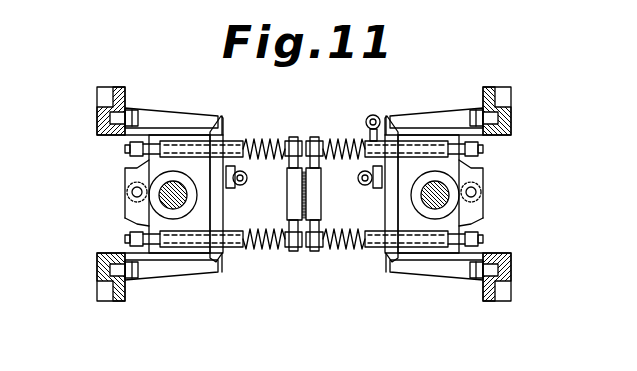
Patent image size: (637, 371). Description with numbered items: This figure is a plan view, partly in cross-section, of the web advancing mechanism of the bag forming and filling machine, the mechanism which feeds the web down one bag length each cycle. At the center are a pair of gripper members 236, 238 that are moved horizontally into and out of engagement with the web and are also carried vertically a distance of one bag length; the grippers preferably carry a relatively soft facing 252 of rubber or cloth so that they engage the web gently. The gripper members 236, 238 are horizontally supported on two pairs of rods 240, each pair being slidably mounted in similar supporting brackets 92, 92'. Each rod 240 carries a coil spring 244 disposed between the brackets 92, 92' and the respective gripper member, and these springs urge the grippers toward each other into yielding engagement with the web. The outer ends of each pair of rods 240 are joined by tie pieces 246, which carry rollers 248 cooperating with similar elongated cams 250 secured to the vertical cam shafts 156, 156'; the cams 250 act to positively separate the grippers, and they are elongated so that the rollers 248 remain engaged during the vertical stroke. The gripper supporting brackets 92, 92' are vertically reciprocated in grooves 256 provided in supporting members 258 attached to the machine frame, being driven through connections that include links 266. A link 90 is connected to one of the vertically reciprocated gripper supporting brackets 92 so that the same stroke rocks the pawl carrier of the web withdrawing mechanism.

The supporting member 258 is at (155, 112).
The gripper supporting bracket 92 is at (465, 155).
The gripper supporting bracket 92' is at (171, 205).
The groove 256 is at (219, 125).
The coil spring 244 is at (242, 168).
The rod 240 is at (289, 137).
The link 266 is at (287, 137).
The soft facing 252 is at (283, 250).
The vertical cam shaft 156 is at (492, 194).
The vertical cam shaft 156' is at (128, 194).
The tie piece 246 is at (140, 167).
The elongated cam 250 is at (150, 223).
The roller 248 is at (125, 190).
The gripper member 238 is at (287, 213).
The gripper member 236 is at (324, 188).
The link 90 is at (374, 115).